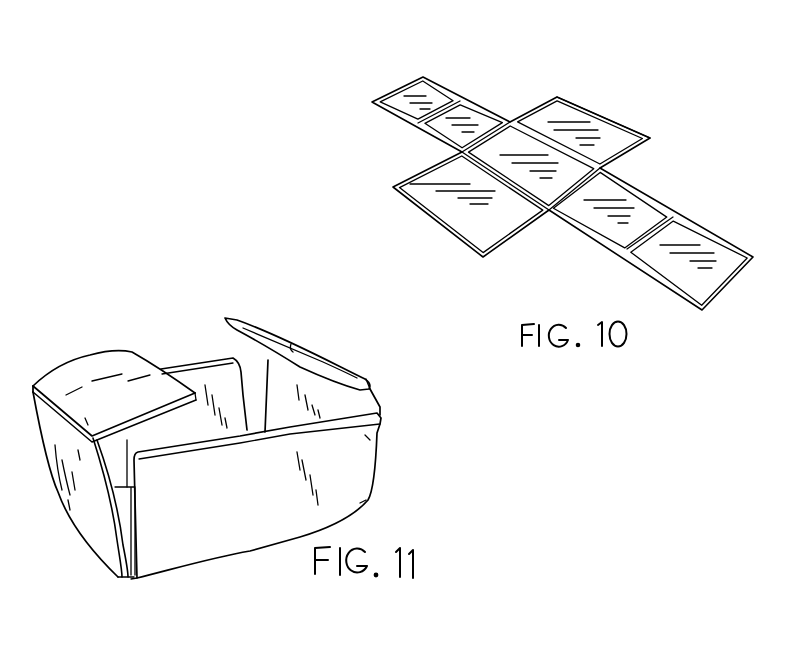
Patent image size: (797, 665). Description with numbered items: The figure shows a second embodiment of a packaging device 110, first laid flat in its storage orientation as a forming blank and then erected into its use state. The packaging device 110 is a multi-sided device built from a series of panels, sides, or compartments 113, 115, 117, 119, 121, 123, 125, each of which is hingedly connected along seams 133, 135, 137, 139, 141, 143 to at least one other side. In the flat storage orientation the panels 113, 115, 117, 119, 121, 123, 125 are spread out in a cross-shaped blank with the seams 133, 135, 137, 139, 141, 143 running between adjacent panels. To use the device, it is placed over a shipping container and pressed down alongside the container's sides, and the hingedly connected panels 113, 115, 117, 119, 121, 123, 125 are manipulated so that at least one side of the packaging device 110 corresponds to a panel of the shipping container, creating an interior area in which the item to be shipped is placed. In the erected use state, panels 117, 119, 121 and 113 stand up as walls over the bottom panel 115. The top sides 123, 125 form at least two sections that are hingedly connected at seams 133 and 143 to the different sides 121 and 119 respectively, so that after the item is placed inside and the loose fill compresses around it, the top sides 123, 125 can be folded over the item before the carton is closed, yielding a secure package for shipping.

In FIG. 10, the packaging device 110 is at (657, 83).
In FIG. 11, the packaging device 110 is at (156, 286).
In FIG. 10, the panel 113 is at (588, 127).
In FIG. 11, the panel 113 is at (213, 387).
In FIG. 10, the panel 115 is at (530, 150).
In FIG. 11, the panel 115 is at (127, 510).
In FIG. 10, the panel 117 is at (437, 180).
In FIG. 11, the panel 117 is at (343, 470).
In FIG. 10, the panel 119 is at (472, 120).
In FIG. 11, the panel 119 is at (80, 513).
In FIG. 10, the panel 121 is at (628, 203).
In FIG. 11, the panel 121 is at (327, 398).
In FIG. 10, the top side 123 is at (700, 247).
In FIG. 11, the top side 123 is at (292, 345).
In FIG. 10, the top side 125 is at (412, 100).
In FIG. 11, the top side 125 is at (100, 367).
In FIG. 10, the seam 133 is at (643, 240).
In FIG. 11, the seam 133 is at (372, 382).
In FIG. 10, the seam 135 is at (572, 197).
In FIG. 10, the seam 137 is at (582, 158).
In FIG. 11, the seam 137 is at (127, 487).
In FIG. 10, the seam 139 is at (497, 180).
In FIG. 11, the seam 139 is at (140, 580).
In FIG. 10, the seam 141 is at (490, 133).
In FIG. 11, the seam 141 is at (117, 580).
In FIG. 10, the seam 143 is at (400, 118).
In FIG. 11, the seam 143 is at (57, 403).